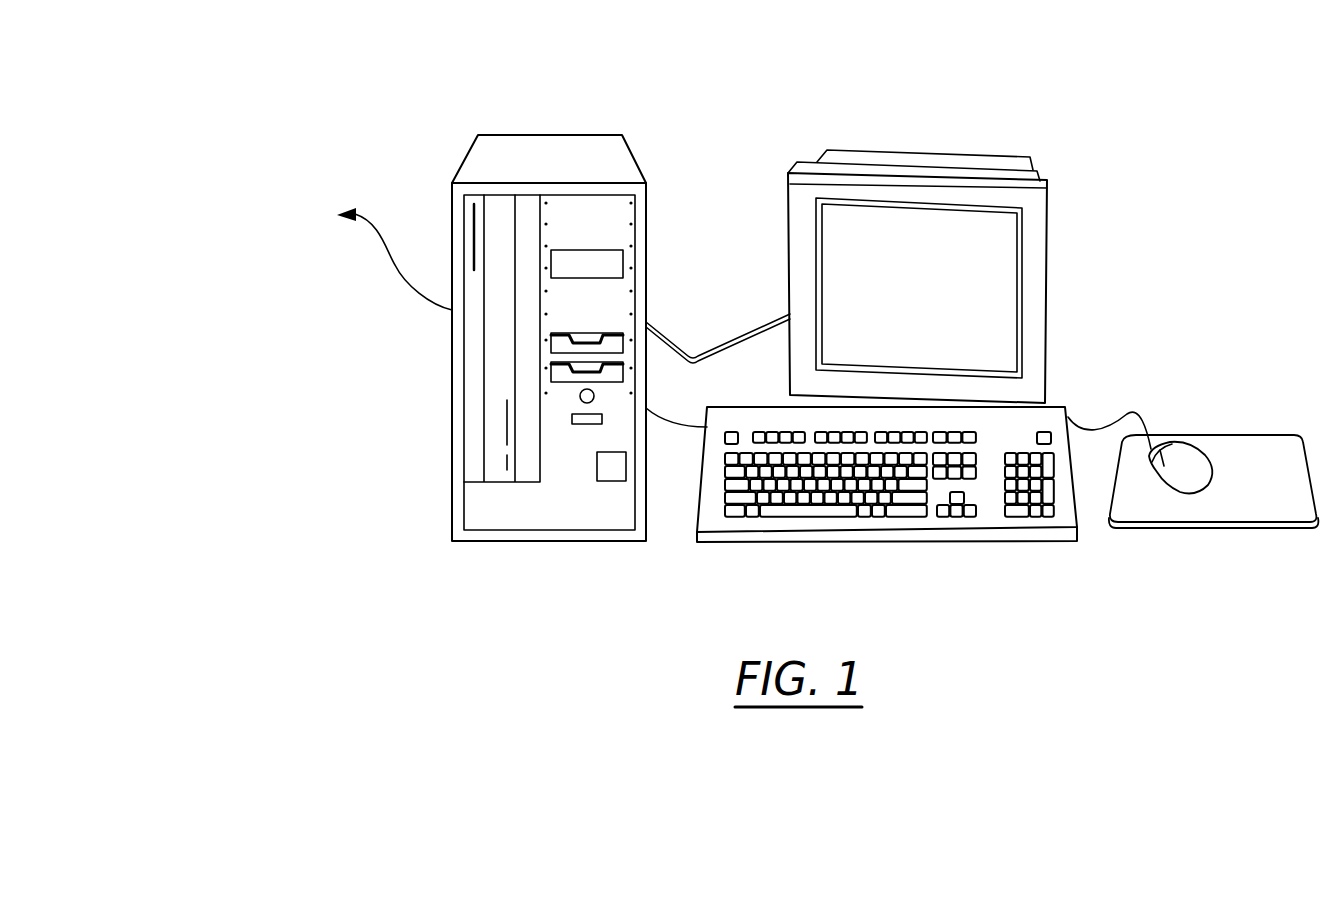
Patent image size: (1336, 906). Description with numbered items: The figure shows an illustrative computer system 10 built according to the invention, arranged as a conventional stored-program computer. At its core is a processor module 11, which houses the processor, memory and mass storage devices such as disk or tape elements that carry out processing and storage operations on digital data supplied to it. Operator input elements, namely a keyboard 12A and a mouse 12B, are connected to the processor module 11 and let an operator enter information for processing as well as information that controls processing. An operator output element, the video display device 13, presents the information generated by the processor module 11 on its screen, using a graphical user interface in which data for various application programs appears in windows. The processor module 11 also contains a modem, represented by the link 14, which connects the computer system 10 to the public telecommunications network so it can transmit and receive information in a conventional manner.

The computer system 10 is at (458, 71).
The processor module 11 is at (464, 416).
The keyboard 12A is at (815, 536).
The mouse 12B is at (1148, 527).
The video display device 13 is at (1046, 275).
The modem 14 is at (438, 338).